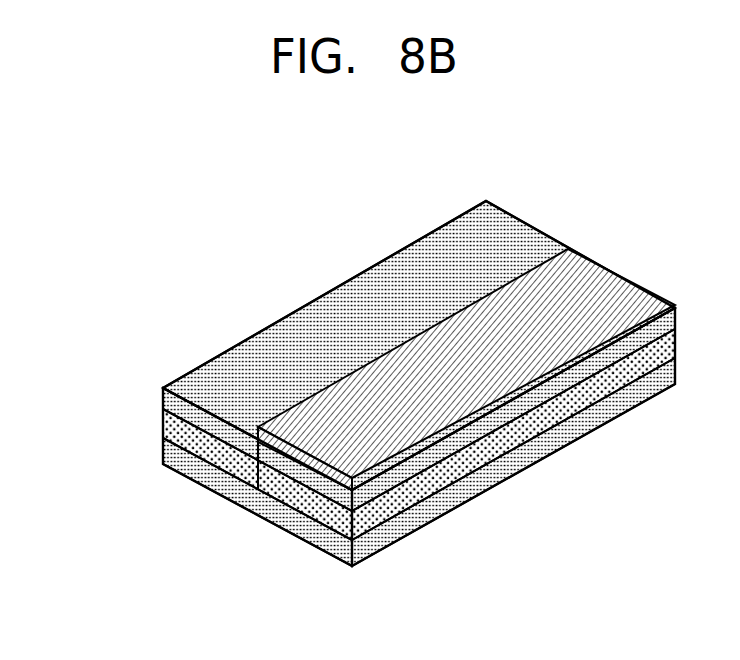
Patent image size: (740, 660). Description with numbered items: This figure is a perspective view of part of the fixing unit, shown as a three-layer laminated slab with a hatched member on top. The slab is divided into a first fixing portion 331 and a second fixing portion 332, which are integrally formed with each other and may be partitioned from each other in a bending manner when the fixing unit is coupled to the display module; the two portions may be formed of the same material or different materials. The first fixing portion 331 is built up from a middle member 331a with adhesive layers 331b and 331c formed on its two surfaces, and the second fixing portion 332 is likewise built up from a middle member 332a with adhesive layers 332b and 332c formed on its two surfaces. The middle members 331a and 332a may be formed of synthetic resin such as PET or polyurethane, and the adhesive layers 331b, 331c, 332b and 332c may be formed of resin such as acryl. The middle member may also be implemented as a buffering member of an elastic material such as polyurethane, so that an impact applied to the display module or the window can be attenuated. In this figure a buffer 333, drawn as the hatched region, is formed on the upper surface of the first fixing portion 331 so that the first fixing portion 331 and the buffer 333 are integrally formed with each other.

The first fixing portion 331 is at (423, 471).
The middle member 331a is at (320, 518).
The adhesive layer 331b is at (335, 553).
The adhesive layer 331c is at (308, 485).
The second fixing portion 332 is at (188, 473).
The middle member 332a is at (163, 423).
The adhesive layer 332b is at (163, 450).
The adhesive layer 332c is at (163, 398).
The buffer 333 is at (608, 278).